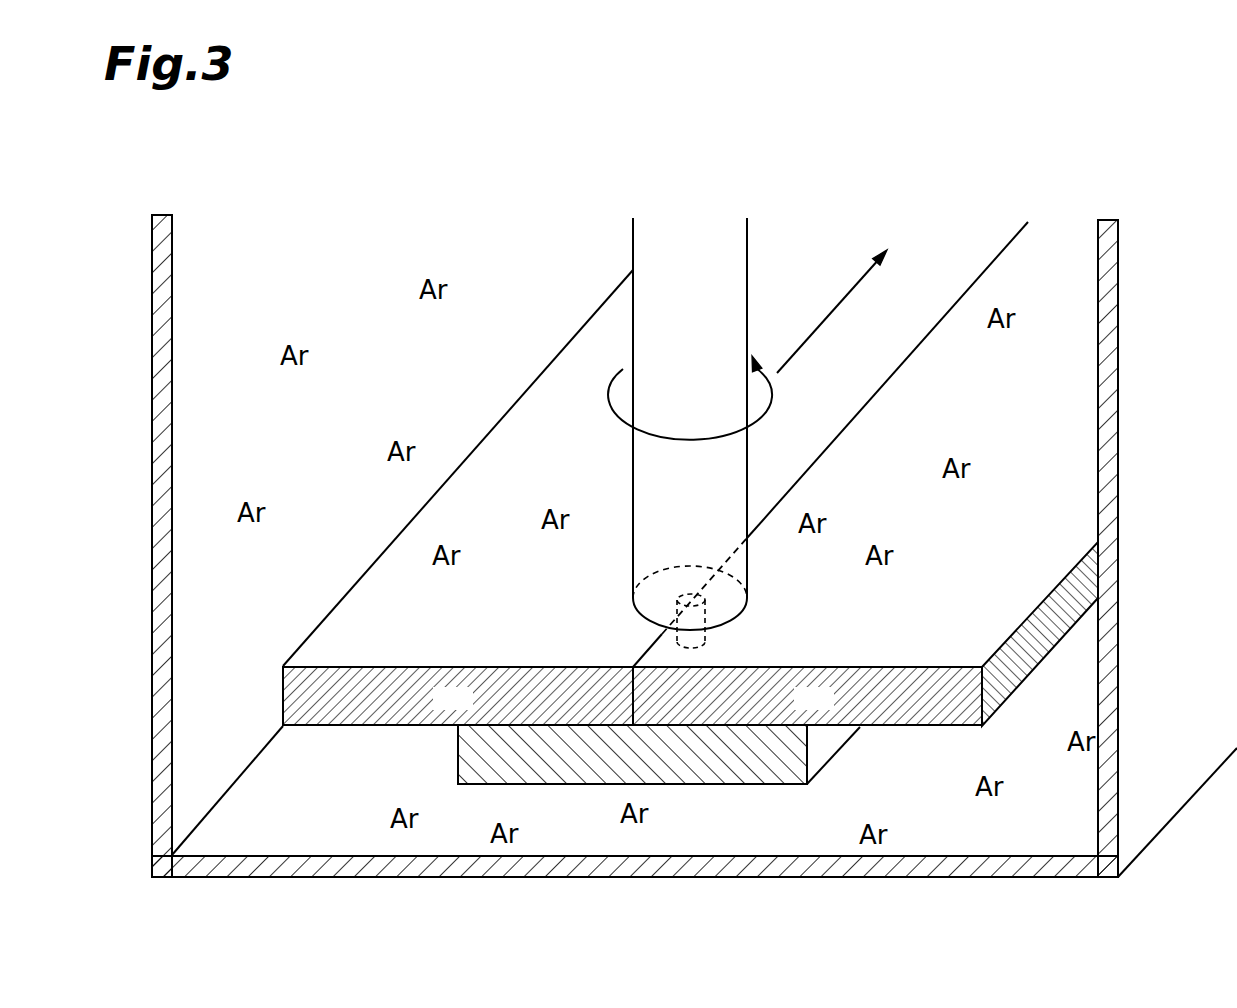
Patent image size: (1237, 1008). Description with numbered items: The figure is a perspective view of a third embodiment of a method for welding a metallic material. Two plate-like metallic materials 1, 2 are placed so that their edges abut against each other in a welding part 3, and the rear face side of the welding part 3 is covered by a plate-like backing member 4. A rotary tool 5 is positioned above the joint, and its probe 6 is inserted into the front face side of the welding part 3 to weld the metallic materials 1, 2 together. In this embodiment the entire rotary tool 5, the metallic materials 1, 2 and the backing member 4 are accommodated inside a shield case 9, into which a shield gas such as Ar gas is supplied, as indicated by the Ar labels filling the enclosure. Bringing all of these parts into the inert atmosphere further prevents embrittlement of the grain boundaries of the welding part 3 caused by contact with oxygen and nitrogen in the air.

The metallic material 1 is at (520, 667).
The metallic material 2 is at (910, 680).
The welding part 3 is at (818, 452).
The backing member 4 is at (765, 775).
The rotary tool 5 is at (727, 285).
The probe 6 is at (660, 570).
The shield case 9 is at (152, 598).